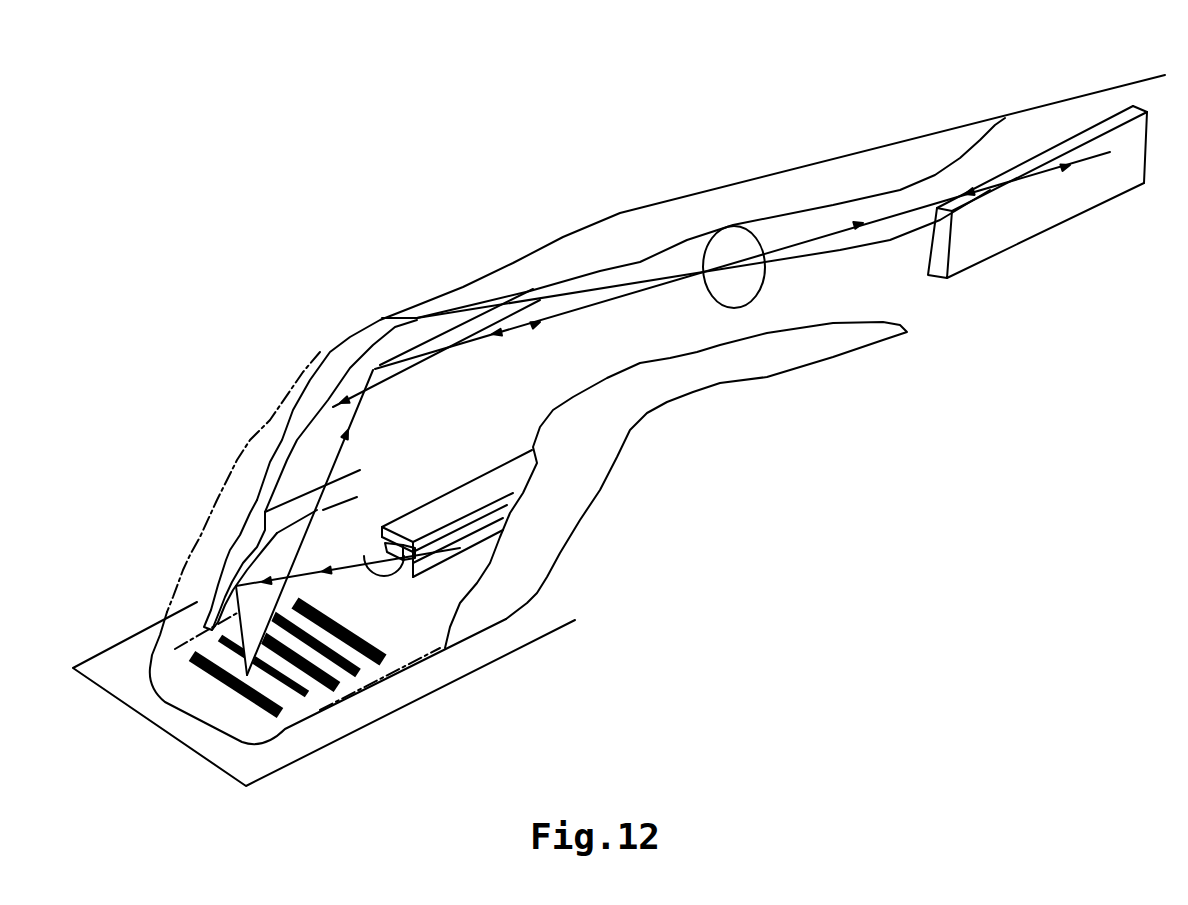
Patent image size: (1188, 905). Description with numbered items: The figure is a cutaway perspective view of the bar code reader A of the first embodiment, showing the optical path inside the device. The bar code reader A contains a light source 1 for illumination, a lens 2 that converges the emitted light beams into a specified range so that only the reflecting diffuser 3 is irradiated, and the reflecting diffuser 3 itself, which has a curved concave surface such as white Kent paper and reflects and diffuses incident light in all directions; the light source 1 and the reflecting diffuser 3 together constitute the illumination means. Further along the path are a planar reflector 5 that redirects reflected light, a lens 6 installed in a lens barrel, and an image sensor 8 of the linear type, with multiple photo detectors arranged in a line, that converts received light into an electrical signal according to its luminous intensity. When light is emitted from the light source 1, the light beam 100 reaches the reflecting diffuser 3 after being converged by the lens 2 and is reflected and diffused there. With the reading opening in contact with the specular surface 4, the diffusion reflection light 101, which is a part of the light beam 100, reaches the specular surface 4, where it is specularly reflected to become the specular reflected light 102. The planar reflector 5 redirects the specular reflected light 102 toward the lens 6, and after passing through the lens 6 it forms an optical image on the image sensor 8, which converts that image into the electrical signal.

The light source 1 is at (410, 547).
The lens 2 is at (390, 585).
The reflecting diffuser 3 is at (264, 543).
The specular surface 4 is at (272, 725).
The planar reflector 5 is at (390, 347).
The lens 6 is at (732, 242).
The image sensor 8 is at (1047, 155).
The light beam 100 is at (282, 580).
The diffusion reflection light 101 is at (240, 608).
The specular reflected light 102 is at (341, 450).
The bar code reader A is at (514, 260).